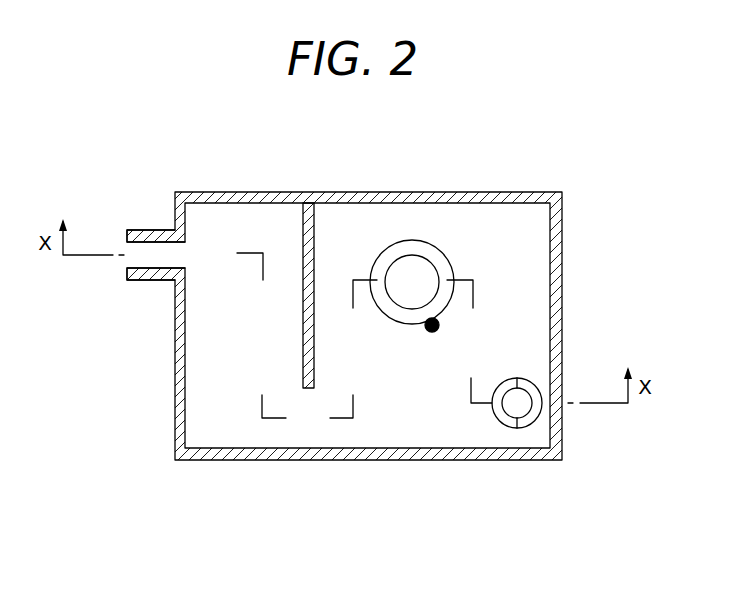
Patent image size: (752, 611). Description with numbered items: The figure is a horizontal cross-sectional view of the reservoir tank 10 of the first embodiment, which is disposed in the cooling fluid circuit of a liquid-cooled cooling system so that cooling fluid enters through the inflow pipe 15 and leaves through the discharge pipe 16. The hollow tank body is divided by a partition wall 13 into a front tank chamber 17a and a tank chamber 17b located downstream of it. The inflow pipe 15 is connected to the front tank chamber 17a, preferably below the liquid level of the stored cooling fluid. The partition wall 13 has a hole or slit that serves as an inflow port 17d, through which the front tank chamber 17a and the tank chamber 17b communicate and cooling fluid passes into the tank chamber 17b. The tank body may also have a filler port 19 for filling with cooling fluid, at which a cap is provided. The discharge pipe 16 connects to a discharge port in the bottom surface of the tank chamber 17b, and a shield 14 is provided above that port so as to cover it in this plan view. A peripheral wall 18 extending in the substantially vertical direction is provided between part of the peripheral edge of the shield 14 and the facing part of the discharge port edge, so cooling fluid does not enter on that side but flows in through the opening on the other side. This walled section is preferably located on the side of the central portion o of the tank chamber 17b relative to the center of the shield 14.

The reservoir tank 10 is at (380, 577).
The partition wall 13 is at (298, 378).
The shield 14 is at (522, 400).
The inflow pipe 15 is at (150, 283).
The discharge pipe 16 is at (531, 422).
The front tank chamber 17a is at (263, 238).
The tank chamber 17b is at (353, 242).
The inflow port 17d is at (307, 433).
The peripheral wall 18 is at (496, 418).
The filler port 19 is at (441, 242).
The central portion o is at (446, 331).